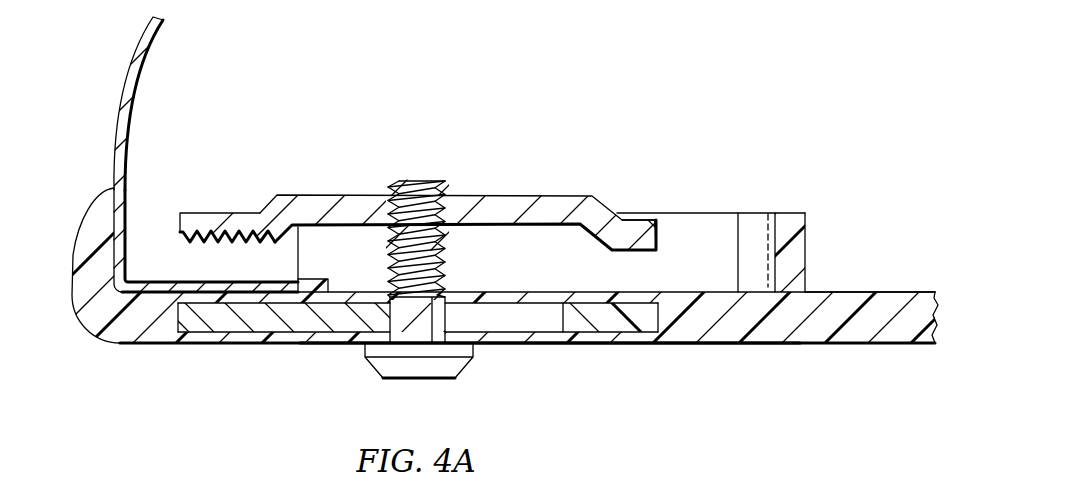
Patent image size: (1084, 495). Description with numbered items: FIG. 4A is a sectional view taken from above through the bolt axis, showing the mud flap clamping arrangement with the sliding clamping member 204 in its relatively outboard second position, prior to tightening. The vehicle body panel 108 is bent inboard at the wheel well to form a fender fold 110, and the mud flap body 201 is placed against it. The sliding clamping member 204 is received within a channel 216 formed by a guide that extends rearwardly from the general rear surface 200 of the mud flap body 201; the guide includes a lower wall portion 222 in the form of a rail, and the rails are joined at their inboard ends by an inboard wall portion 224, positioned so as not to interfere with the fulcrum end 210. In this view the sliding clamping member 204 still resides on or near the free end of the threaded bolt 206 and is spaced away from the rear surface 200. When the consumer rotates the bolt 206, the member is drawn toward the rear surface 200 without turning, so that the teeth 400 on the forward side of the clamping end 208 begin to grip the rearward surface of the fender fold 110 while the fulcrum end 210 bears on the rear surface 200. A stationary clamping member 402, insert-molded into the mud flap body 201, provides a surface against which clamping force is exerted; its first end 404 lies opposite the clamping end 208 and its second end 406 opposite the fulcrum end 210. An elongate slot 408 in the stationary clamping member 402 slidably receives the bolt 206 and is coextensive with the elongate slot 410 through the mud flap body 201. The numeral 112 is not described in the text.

The panel 108 is at (118, 134).
The fender fold 110 is at (150, 294).
The housing 112 is at (843, 345).
The rear surface 200 is at (893, 291).
The mud flap body 201 is at (718, 345).
The sliding clamping member 204 is at (503, 193).
The threaded bolt 206 is at (413, 182).
The clamping end 208 is at (217, 212).
The fulcrum end 210 is at (637, 218).
The channel 216 is at (712, 237).
The lower wall portion 222 is at (760, 212).
The inboard wall portion 224 is at (807, 220).
The teeth 400 is at (268, 251).
The stationary clamping member 402 is at (333, 322).
The first end 404 is at (210, 306).
The second end 406 is at (638, 334).
The elongate slot 408 is at (525, 322).
The elongate slot 410 is at (490, 300).